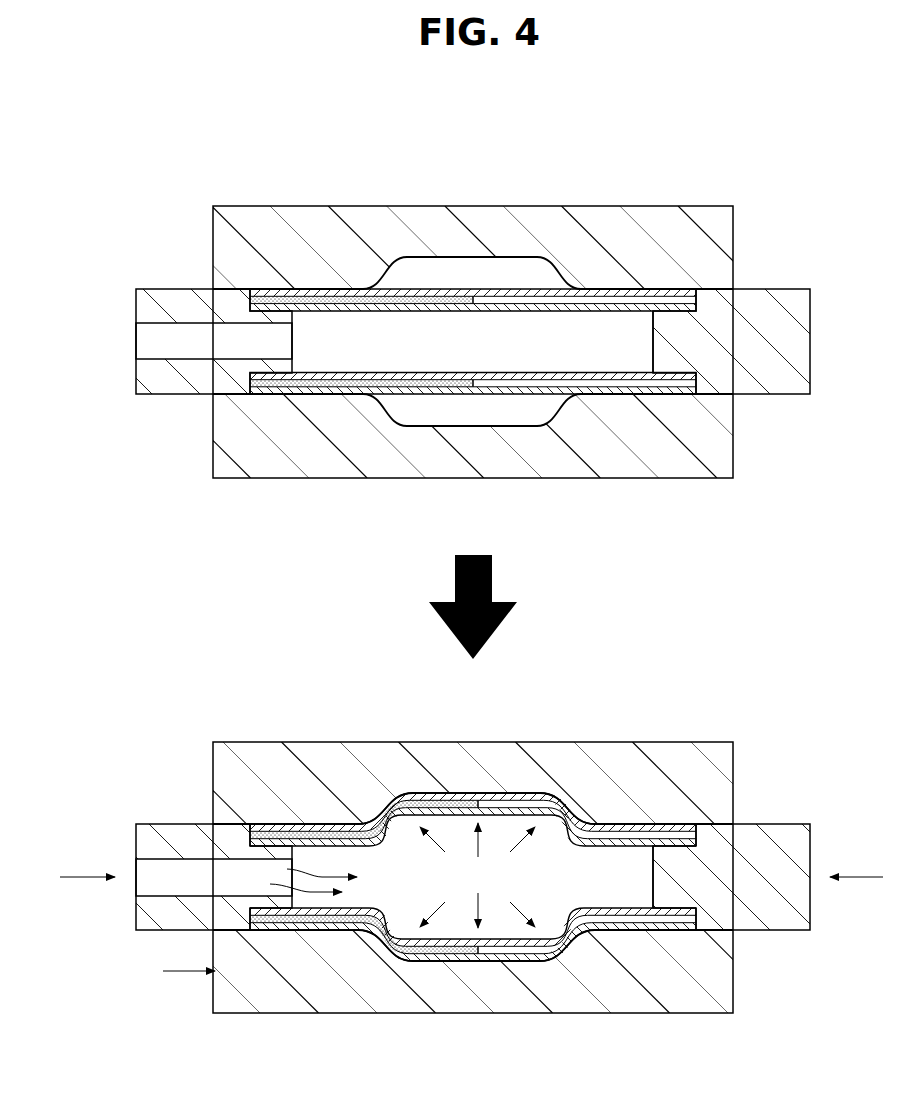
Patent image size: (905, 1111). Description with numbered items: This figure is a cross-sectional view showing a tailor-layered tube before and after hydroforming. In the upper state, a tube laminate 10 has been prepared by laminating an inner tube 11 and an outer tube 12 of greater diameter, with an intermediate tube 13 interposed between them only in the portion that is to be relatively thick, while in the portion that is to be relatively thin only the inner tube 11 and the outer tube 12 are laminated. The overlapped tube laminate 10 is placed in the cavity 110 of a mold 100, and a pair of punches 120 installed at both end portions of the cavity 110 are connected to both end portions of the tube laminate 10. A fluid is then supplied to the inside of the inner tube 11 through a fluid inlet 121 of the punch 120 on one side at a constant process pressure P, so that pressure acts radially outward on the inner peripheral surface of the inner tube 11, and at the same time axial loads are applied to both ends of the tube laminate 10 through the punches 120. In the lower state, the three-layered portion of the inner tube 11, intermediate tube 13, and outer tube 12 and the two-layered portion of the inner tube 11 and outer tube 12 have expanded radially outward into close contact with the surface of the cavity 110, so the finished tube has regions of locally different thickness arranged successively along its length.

The tube laminate 10 is at (473, 538).
The inner tube 11 is at (378, 307).
The outer tube 12 is at (293, 292).
The intermediate tube 13 is at (340, 298).
The mold 100 is at (597, 218).
The cavity 110 is at (493, 258).
The punch 120 is at (178, 300).
The fluid inlet 121 is at (177, 348).
The forming pressure P is at (471, 897).